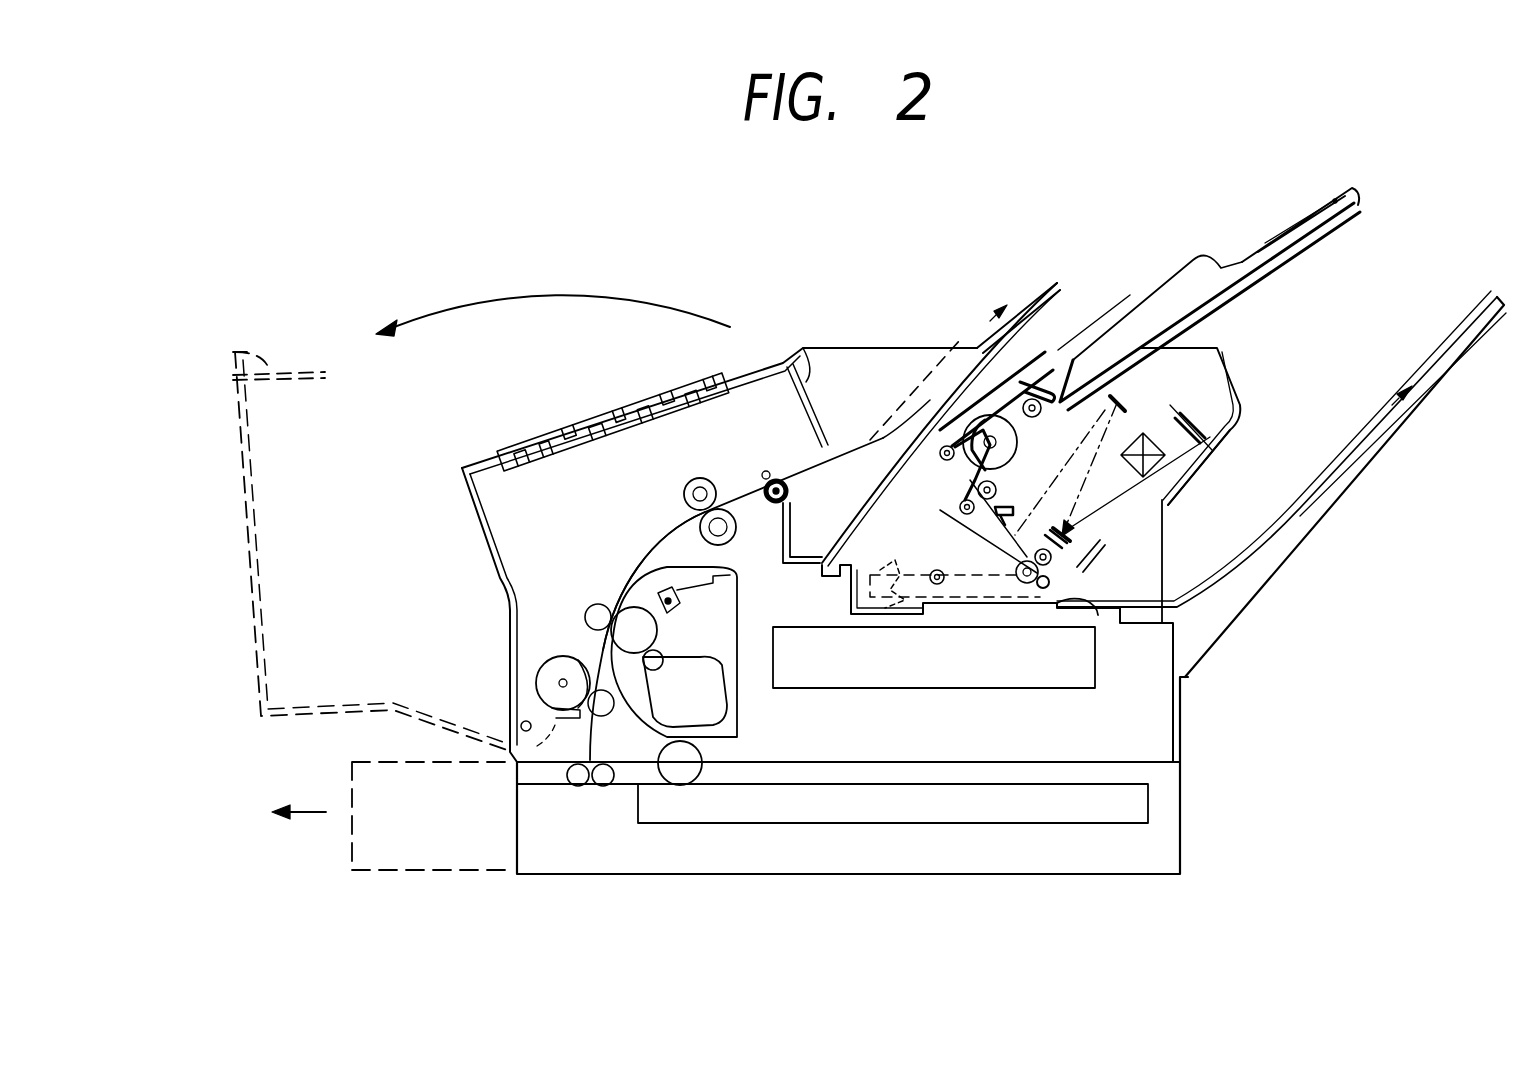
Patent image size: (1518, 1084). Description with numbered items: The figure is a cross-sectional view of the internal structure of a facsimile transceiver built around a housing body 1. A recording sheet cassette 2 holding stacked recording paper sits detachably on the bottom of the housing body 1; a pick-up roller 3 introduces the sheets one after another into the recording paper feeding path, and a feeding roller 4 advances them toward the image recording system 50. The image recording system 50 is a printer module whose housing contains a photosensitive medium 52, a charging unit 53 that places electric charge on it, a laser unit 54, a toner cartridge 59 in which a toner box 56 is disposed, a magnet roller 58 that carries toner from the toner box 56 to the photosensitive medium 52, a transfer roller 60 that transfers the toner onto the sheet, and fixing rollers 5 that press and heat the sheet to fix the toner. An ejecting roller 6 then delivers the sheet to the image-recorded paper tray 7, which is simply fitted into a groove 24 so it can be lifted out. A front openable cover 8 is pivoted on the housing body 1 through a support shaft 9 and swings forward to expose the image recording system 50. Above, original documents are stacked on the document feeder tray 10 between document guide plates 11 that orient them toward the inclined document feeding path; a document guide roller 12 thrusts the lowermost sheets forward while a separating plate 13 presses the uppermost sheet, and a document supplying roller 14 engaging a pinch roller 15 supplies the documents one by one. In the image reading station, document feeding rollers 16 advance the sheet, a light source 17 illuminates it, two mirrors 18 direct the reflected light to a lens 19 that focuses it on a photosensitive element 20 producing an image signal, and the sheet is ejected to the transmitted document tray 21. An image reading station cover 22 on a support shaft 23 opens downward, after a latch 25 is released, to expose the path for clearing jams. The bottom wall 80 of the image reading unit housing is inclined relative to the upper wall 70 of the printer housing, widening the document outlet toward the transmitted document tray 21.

The housing body 1 is at (1183, 776).
The recording sheet cassette 2 is at (348, 873).
The pick-up roller 3 is at (683, 786).
The feeding roller 4 is at (546, 688).
The fixing rollers 5 is at (690, 532).
The ejecting roller 6 is at (764, 476).
The image-recorded paper tray 7 is at (1046, 282).
The front openable cover 8 is at (236, 402).
The support shaft 9 is at (528, 733).
The document feeder tray 10 is at (1366, 197).
The document guide plates 11 is at (1207, 253).
The document guide roller 12 is at (1069, 352).
The separating plate 13 is at (1059, 343).
The document supplying roller 14 is at (972, 343).
The pinch roller 15 is at (930, 412).
The document feeding rollers 16 is at (1018, 476).
The light source 17 is at (942, 586).
The mirrors 18 is at (1122, 400).
The lens 19 is at (1200, 425).
The photosensitive element 20 is at (1167, 420).
The transmitted document tray 21 is at (1432, 320).
The image reading station cover 22 is at (925, 510).
The support shaft 23 is at (1057, 586).
The groove 24 is at (832, 577).
The latch 25 is at (910, 490).
The image recording system 50 is at (848, 718).
The photosensitive medium 52 is at (633, 616).
The charging unit 53 is at (718, 583).
The laser unit 54 is at (1073, 688).
The toner box 56 is at (712, 710).
The magnet roller 58 is at (662, 660).
The toner cartridge 59 is at (662, 560).
The transfer roller 60 is at (597, 604).
The upper wall of the printer housing 70 is at (1098, 620).
The bottom wall of the image reading unit housing 80 is at (1216, 455).